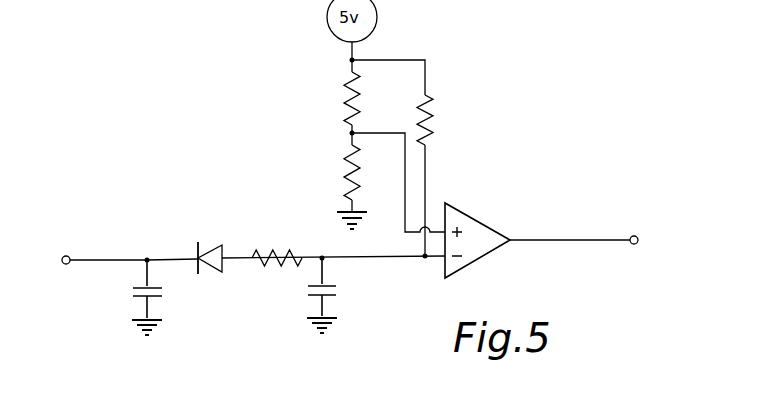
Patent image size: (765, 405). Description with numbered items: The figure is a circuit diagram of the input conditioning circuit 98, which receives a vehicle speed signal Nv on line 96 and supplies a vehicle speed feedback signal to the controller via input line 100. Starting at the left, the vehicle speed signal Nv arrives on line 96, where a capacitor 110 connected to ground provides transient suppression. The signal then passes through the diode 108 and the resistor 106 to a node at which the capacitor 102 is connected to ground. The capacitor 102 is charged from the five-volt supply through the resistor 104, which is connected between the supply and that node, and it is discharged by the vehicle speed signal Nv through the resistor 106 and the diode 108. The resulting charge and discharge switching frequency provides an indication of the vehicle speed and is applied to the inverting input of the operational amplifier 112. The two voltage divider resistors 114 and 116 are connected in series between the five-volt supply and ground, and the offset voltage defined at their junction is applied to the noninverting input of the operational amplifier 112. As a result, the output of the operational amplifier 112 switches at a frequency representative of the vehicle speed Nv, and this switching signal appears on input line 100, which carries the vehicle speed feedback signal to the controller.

The line 96 is at (92, 259).
The input conditioning circuit 98 is at (247, 155).
The input line 100 is at (553, 238).
The capacitor 102 is at (310, 293).
The resistor 104 is at (435, 115).
The resistor 106 is at (297, 255).
The diode 108 is at (208, 252).
The capacitor 110 is at (138, 300).
The operational amplifier 112 is at (475, 264).
The voltage divider resistor 114 is at (345, 86).
The voltage divider resistor 116 is at (347, 158).